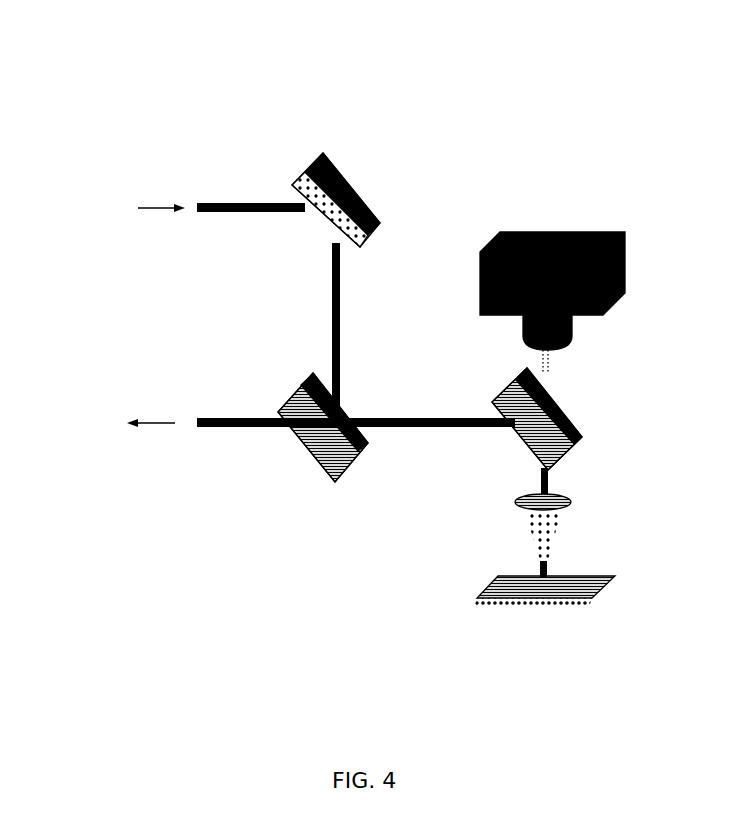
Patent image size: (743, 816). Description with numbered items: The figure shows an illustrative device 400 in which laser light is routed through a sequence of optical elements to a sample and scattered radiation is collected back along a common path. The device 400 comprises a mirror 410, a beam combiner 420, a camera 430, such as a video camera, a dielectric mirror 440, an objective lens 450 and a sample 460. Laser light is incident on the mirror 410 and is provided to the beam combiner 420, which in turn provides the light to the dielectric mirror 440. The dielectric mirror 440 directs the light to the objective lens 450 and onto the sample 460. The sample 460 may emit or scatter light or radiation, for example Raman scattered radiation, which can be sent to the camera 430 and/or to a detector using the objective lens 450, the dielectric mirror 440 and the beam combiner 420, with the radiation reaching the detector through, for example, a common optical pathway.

The device 400 is at (130, 543).
The mirror 410 is at (369, 112).
The beam combiner 420 is at (293, 518).
The camera 430 is at (565, 194).
The dielectric mirror 440 is at (597, 394).
The objective lens 450 is at (599, 509).
The sample 460 is at (546, 613).